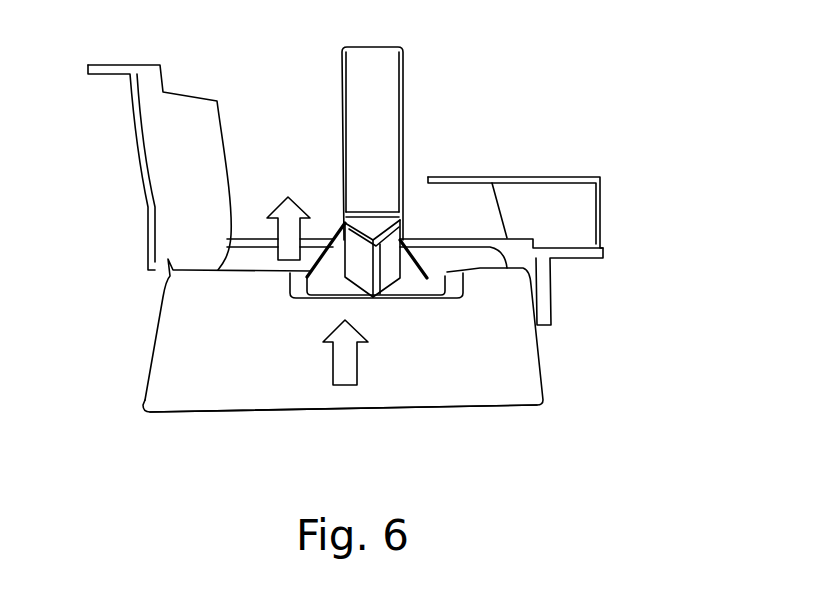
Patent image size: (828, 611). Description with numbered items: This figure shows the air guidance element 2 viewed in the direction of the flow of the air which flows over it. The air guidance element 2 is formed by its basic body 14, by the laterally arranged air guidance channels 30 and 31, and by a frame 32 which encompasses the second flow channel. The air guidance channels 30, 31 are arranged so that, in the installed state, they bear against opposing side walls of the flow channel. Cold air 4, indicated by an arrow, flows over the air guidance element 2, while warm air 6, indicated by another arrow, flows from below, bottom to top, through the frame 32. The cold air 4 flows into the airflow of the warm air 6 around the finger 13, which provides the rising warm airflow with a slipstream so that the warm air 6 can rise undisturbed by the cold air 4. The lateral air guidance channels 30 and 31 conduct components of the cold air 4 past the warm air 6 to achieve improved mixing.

The air guidance element 2 is at (442, 333).
The cold air 4 is at (345, 358).
The warm air 6 is at (288, 213).
The finger 13 is at (362, 92).
The basic body 14 is at (252, 375).
The air guidance channel 30 is at (187, 183).
The air guidance channel 31 is at (575, 212).
The frame 32 is at (407, 240).